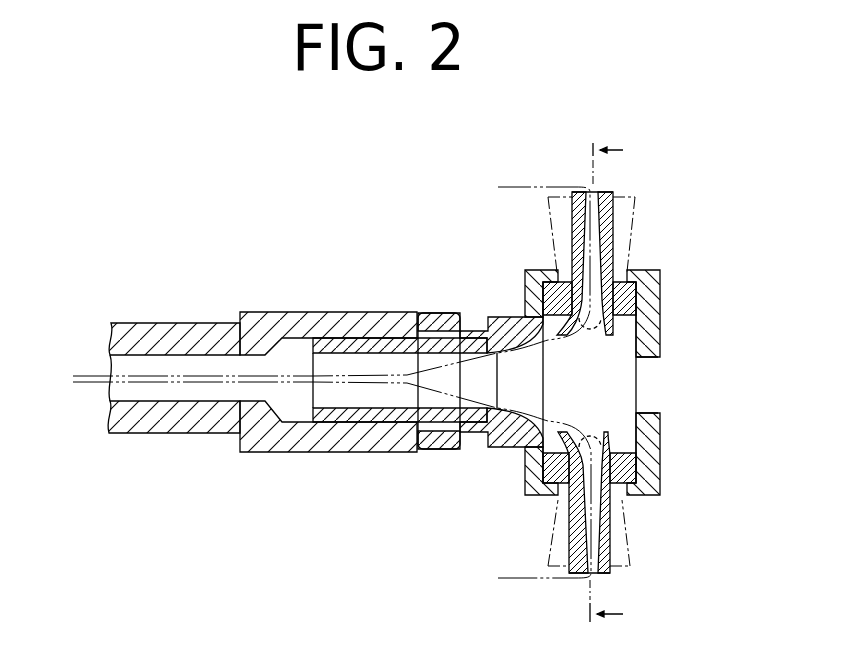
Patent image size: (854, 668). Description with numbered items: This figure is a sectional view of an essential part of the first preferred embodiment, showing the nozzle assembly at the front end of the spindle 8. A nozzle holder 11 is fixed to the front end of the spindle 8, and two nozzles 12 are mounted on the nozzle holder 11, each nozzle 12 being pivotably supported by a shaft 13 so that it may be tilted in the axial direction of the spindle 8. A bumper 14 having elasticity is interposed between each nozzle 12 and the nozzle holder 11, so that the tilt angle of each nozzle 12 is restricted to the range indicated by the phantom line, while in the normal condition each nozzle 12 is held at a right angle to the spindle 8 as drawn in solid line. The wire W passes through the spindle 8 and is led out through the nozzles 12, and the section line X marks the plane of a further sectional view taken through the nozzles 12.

The spindle 8 is at (313, 312).
The nozzle holder 11 is at (658, 443).
The nozzle 12 is at (613, 222).
The shaft 13 is at (592, 326).
The bumper 14 is at (658, 286).
The wire W is at (95, 377).
The section line X- X is at (601, 387).